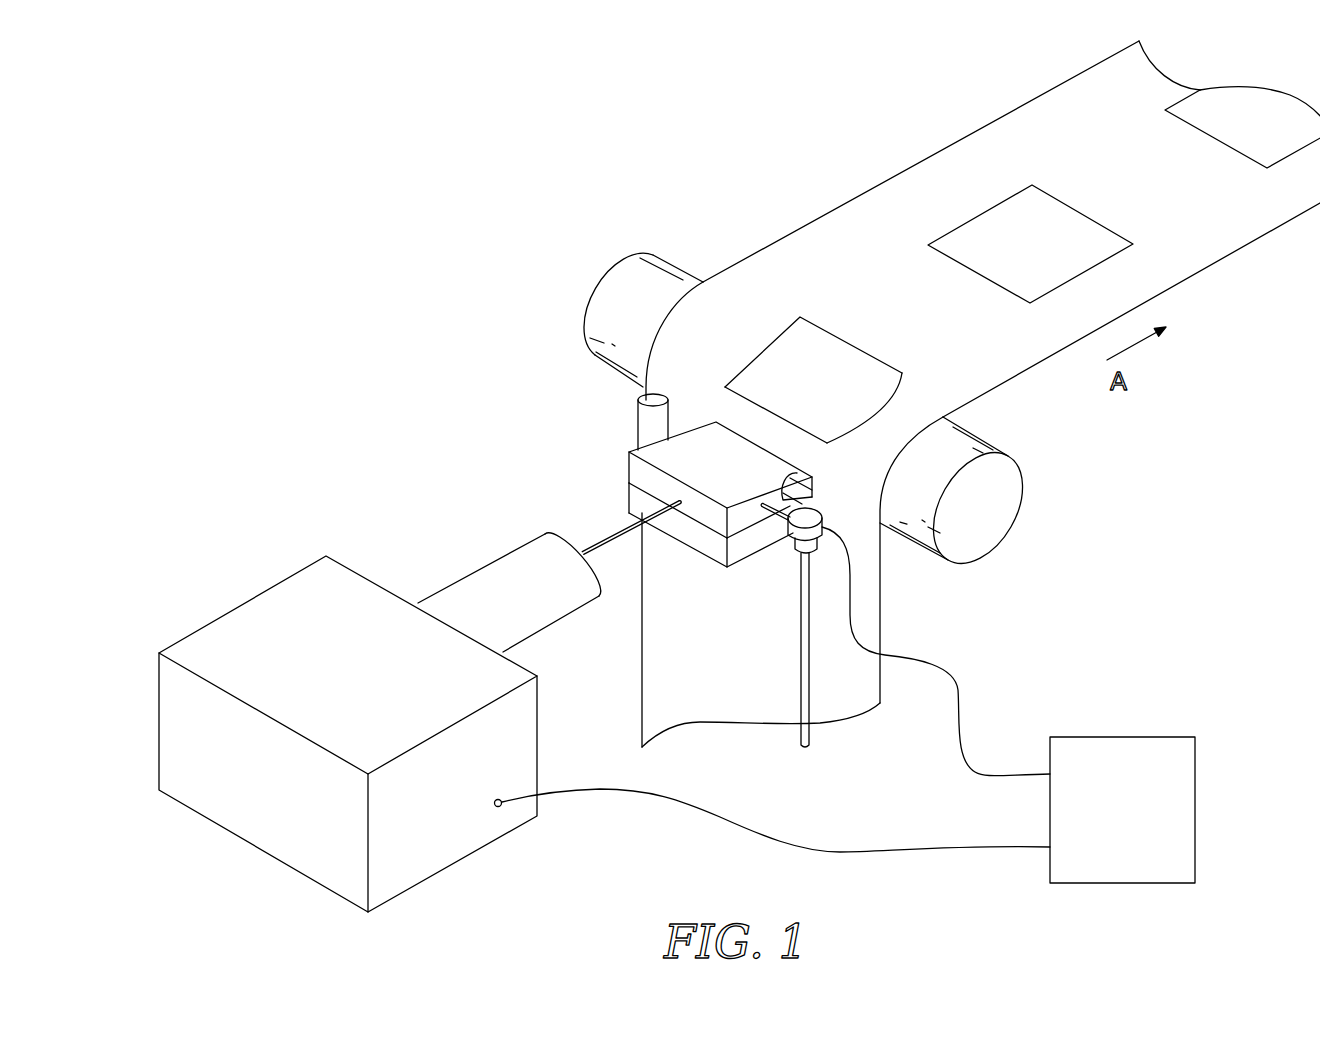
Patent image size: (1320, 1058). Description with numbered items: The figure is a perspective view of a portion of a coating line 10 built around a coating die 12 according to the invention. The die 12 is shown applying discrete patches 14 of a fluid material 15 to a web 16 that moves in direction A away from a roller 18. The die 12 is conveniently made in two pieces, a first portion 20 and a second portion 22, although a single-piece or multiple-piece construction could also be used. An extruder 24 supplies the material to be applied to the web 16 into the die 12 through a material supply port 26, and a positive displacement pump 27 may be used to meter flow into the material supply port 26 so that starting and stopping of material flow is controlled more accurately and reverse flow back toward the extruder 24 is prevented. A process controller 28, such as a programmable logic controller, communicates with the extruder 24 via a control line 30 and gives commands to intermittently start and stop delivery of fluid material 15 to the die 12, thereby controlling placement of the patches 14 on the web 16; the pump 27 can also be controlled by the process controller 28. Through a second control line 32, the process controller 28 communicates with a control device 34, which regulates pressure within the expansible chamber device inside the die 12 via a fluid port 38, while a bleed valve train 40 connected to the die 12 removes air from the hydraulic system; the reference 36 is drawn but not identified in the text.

The coating line 10 is at (392, 306).
The coating die 12 is at (703, 570).
The discrete patches 14 is at (819, 321).
The fluid material 15 is at (835, 352).
The web 16 is at (932, 172).
The roller 18 is at (1003, 521).
The first portion 20 is at (628, 468).
The second portion 22 is at (695, 546).
The extruder 24 is at (258, 580).
The material supply port 26 is at (590, 545).
The positive displacement pump 27 is at (483, 577).
The process controller 28 is at (1122, 727).
The control line 30 is at (727, 818).
The control line 32 is at (960, 735).
The control device 34 is at (792, 549).
The sensor rod 36 is at (800, 647).
The fluid port 38 is at (803, 471).
The bleed valve train 40 is at (638, 432).